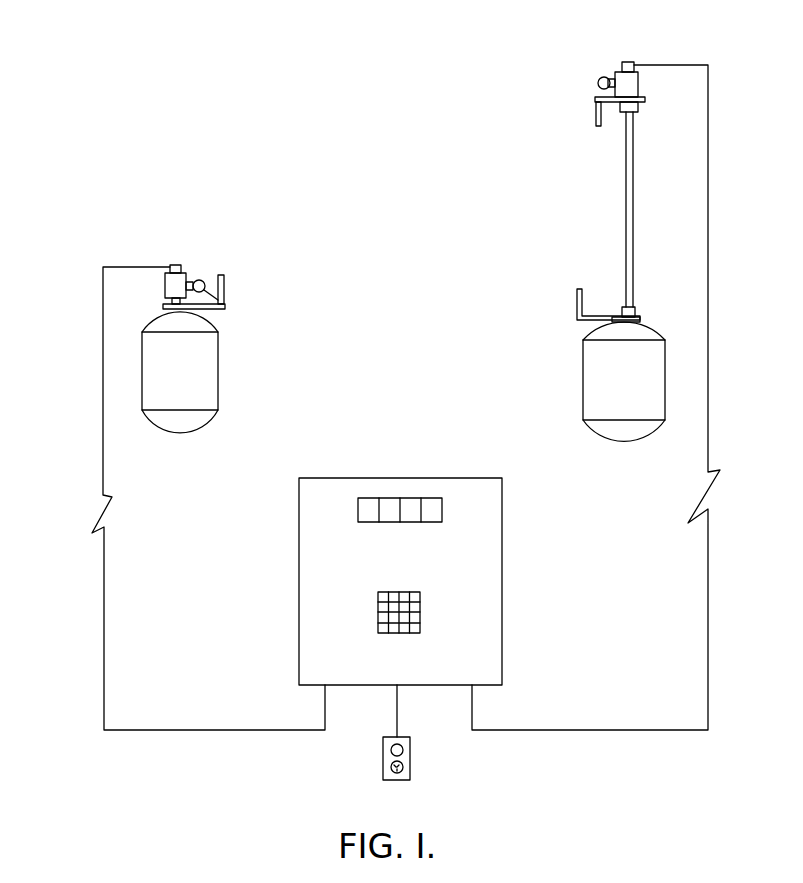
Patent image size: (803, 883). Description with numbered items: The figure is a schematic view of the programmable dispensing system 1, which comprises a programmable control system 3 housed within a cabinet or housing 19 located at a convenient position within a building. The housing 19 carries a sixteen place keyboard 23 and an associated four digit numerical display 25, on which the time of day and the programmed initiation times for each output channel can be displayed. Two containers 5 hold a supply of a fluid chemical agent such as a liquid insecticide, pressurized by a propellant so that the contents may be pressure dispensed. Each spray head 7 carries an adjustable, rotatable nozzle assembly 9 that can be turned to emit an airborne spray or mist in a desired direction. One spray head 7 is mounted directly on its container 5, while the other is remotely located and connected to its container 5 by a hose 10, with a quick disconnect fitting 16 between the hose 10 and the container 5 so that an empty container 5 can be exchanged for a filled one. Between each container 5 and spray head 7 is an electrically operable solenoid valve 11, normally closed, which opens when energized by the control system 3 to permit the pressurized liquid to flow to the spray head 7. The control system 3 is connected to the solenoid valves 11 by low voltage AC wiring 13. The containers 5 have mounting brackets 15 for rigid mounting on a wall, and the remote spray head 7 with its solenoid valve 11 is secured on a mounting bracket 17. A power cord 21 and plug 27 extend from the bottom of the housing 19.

The dispensing system 1 is at (455, 272).
The programmable control system 3 is at (505, 623).
The container 5 is at (607, 360).
The spray head 7 is at (605, 75).
The nozzle assembly 9 is at (598, 83).
The hose 10 is at (625, 222).
The solenoid valve 11 is at (634, 62).
The AC wiring 13 is at (103, 425).
The mounting bracket 15 is at (577, 291).
The quick disconnect fitting 16 is at (635, 312).
The mounting bracket 17 is at (597, 128).
The housing 19 is at (470, 668).
The power cord 21 is at (397, 707).
The keyboard 23 is at (412, 593).
The numerical display 25 is at (397, 498).
The plug 27 is at (410, 760).